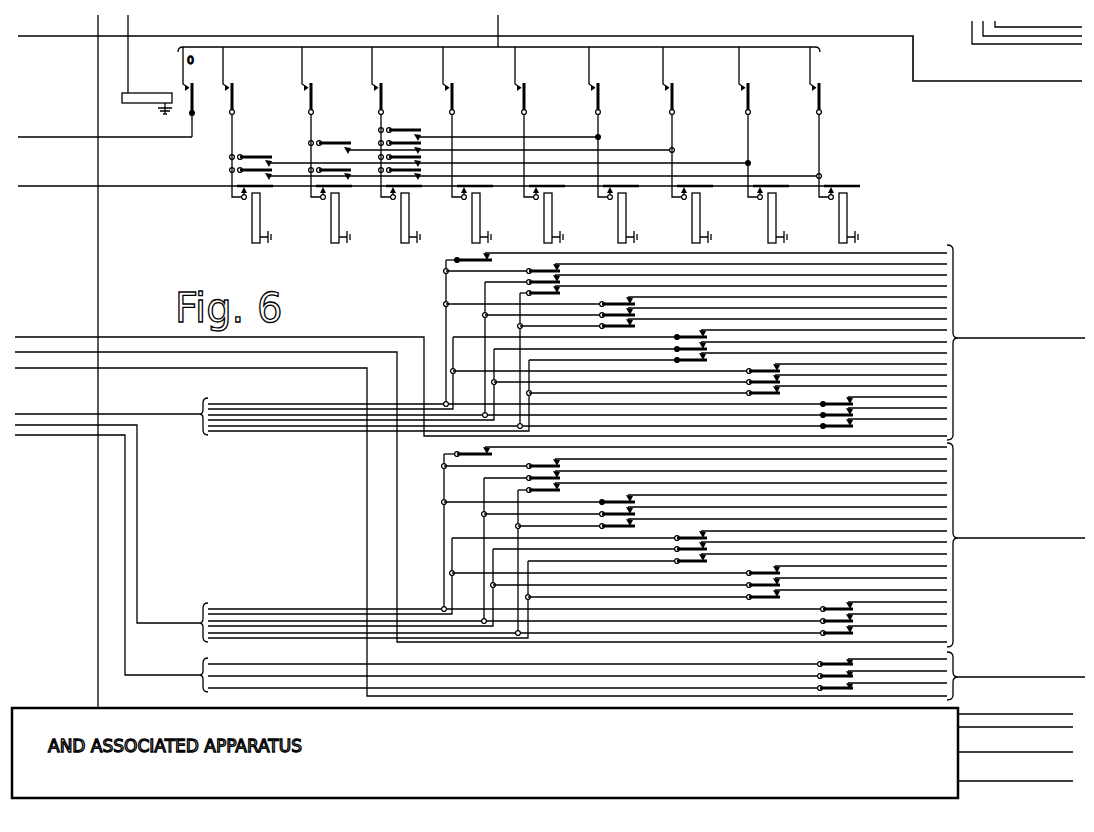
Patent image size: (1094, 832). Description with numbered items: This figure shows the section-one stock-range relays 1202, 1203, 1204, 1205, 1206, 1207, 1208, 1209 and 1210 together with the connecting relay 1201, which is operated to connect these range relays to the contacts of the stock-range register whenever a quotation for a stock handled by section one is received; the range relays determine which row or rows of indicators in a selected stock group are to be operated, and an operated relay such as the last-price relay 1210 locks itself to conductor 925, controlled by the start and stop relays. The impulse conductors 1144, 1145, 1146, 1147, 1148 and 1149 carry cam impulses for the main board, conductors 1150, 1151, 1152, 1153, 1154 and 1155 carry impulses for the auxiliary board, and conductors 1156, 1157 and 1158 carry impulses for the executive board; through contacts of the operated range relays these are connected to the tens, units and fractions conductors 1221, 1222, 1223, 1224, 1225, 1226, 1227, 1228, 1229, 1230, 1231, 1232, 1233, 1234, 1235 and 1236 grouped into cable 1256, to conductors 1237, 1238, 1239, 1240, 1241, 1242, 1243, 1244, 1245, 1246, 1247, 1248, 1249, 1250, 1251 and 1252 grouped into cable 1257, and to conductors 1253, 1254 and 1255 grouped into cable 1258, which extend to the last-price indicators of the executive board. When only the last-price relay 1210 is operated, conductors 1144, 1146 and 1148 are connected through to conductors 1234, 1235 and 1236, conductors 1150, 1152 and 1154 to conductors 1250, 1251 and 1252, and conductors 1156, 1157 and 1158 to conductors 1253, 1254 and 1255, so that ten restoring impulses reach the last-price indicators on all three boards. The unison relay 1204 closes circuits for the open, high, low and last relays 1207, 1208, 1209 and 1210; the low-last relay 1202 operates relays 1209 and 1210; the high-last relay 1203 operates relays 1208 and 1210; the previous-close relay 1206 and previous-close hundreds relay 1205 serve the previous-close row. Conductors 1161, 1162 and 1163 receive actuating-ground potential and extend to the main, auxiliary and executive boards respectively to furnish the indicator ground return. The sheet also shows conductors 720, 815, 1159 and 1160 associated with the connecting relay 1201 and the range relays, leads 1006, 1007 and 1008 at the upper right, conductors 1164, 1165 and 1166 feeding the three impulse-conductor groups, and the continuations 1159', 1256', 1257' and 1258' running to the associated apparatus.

The conductor 720 is at (128, 24).
The common conductor 815 is at (498, 22).
The conductor 925 is at (57, 184).
The conductor 1006 is at (996, 48).
The conductor 1007 is at (1043, 38).
The conductor 1008 is at (1078, 30).
The conductor 1144 is at (238, 404).
The conductor 1145 is at (271, 409).
The conductor 1146 is at (309, 415).
The conductor 1147 is at (242, 421).
The conductor 1148 is at (280, 427).
The conductor 1149 is at (320, 432).
The conductor 1150 is at (244, 609).
The conductor 1151 is at (284, 614).
The conductor 1152 is at (320, 621).
The conductor 1153 is at (244, 627).
The conductor 1154 is at (282, 634).
The conductor 1155 is at (330, 639).
The conductor 1156 is at (248, 665).
The conductor 1157 is at (290, 677).
The conductor 1158 is at (333, 689).
The conductor 1159 is at (550, 62).
The conductor 1160 is at (59, 134).
The actuating-ground conductor 1161 is at (54, 334).
The actuating-ground conductor 1162 is at (55, 350).
The actuating-ground conductor 1163 is at (55, 366).
The conductor 1164 is at (55, 412).
The conductor 1165 is at (55, 423).
The conductor 1166 is at (55, 435).
The connecting relay 1201 is at (169, 88).
The low-last range relay 1202 is at (252, 210).
The high-last relay 1203 is at (331, 210).
The unison relay 1204 is at (401, 210).
The previous-close hundreds relay 1205 is at (472, 210).
The previous close relay 1206 is at (544, 210).
The open range relay 1207 is at (618, 210).
The high range relay 1208 is at (692, 210).
The low range relay 1209 is at (768, 210).
The last-price relay 1210 is at (839, 210).
The conductor 1221 is at (909, 254).
The conductor 1222 is at (909, 265).
The conductor 1223 is at (909, 276).
The conductor 1224 is at (909, 287).
The conductor 1225 is at (909, 298).
The conductor 1226 is at (909, 309).
The conductor 1227 is at (909, 320).
The conductor 1228 is at (909, 331).
The conductor 1229 is at (909, 343).
The conductor 1230 is at (909, 354).
The conductor 1231 is at (909, 365).
The conductor 1232 is at (909, 376).
The conductor 1233 is at (909, 387).
The conductor 1234 is at (909, 398).
The conductor 1235 is at (909, 409).
The conductor 1236 is at (909, 420).
The conductor 1237 is at (909, 448).
The conductor 1238 is at (909, 460).
The conductor 1239 is at (909, 472).
The conductor 1240 is at (909, 484).
The conductor 1241 is at (909, 496).
The conductor 1242 is at (909, 508).
The conductor 1243 is at (909, 520).
The conductor 1244 is at (909, 532).
The conductor 1245 is at (909, 543).
The conductor 1246 is at (909, 555).
The conductor 1247 is at (909, 567).
The conductor 1248 is at (909, 579).
The conductor 1249 is at (909, 591).
The conductor 1250 is at (909, 603).
The conductor 1251 is at (909, 615).
The conductor 1252 is at (909, 627).
The conductor 1253 is at (907, 660).
The conductor 1254 is at (907, 672).
The conductor 1255 is at (907, 684).
The cable 1256 is at (1016, 342).
The cable 1257 is at (1016, 545).
The cable 1258 is at (1016, 676).
The conductor 1159' is at (1015, 706).
The cable 1256' is at (1015, 736).
The cable 1257' is at (1015, 761).
The cable 1258' is at (1015, 790).